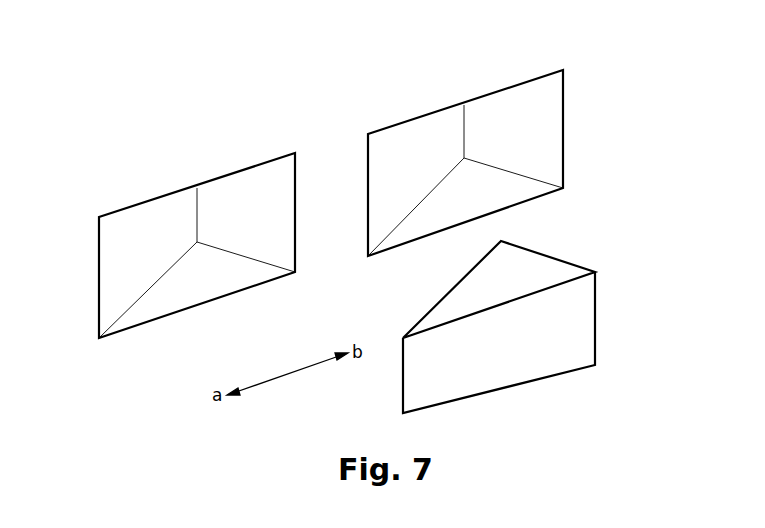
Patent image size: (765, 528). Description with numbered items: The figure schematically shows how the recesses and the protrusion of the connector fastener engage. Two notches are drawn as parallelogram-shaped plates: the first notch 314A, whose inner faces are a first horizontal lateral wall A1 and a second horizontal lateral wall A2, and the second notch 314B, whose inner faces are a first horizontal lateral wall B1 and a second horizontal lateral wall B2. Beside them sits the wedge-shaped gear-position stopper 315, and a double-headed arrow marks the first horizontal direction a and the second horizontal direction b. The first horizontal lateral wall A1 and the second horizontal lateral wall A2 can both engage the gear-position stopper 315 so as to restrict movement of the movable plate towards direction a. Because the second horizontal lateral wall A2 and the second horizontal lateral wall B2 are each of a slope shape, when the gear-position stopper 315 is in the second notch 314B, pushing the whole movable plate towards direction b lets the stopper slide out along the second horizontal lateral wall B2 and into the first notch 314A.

The first notch 314A is at (240, 170).
The second notch 314B is at (497, 90).
The gear-position stopper 315 is at (567, 315).
The first horizontal lateral wall A1 is at (253, 227).
The second horizontal lateral wall A2 is at (130, 253).
The first horizontal lateral wall B1 is at (533, 143).
The second horizontal lateral wall B2 is at (403, 162).